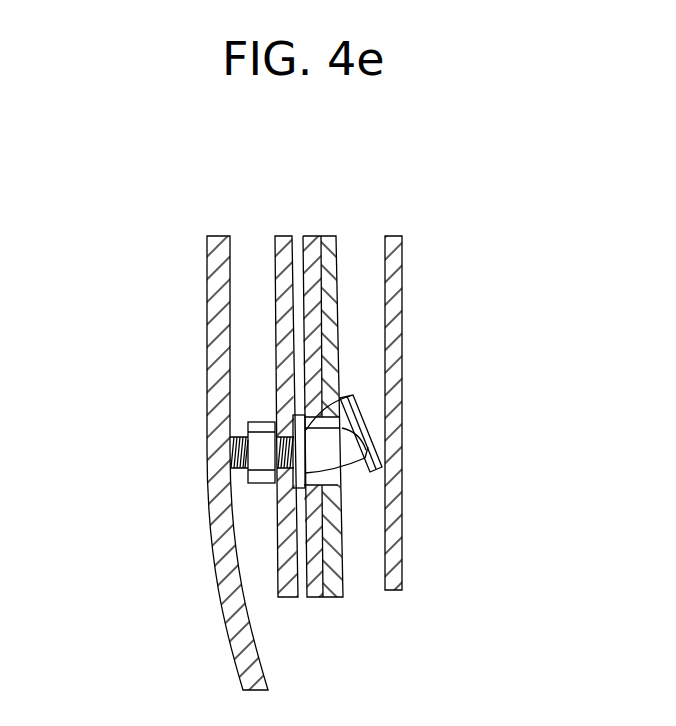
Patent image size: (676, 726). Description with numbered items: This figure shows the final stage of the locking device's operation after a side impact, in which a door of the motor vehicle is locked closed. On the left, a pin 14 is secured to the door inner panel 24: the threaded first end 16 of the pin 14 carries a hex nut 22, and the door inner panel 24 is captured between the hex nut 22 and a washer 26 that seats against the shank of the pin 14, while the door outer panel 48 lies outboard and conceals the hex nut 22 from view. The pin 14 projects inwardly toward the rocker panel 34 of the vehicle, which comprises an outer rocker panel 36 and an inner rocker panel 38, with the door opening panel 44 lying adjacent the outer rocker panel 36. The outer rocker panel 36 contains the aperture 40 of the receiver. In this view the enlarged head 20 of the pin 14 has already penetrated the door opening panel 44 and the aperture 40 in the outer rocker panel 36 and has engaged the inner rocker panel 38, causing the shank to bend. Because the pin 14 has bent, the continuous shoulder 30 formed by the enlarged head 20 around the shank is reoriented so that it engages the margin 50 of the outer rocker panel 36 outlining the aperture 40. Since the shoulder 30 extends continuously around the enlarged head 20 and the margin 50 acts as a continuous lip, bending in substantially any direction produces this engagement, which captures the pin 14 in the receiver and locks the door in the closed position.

The pin 14 is at (343, 472).
The first end 16 is at (230, 460).
The enlarged head 20 is at (367, 422).
The hex nut 22 is at (260, 424).
The door inner panel 24 is at (282, 357).
The washer 26 is at (300, 488).
The continuous shoulder 30 is at (366, 462).
The rocker panel 34 is at (432, 267).
The outer rocker panel 36 is at (327, 312).
The inner rocker panel 38 is at (393, 505).
The aperture 40 is at (372, 452).
The door opening panel 44 is at (307, 306).
The door outer panel 48 is at (220, 540).
The margin 50 is at (362, 403).